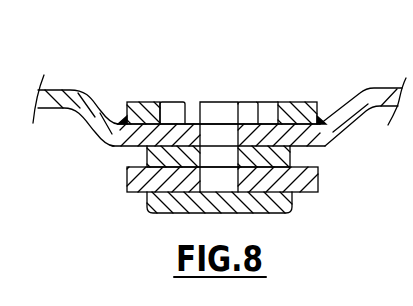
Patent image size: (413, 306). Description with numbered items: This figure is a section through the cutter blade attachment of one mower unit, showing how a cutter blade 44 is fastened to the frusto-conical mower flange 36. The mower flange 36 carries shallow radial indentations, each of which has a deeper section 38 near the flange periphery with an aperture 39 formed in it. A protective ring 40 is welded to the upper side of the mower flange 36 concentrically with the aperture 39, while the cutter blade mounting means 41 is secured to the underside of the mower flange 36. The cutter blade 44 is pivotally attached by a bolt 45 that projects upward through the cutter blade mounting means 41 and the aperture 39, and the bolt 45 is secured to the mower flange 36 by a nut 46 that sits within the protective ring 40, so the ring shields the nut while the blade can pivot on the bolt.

The mower flange 36 is at (64, 89).
The deeper section 38 is at (350, 100).
The aperture 39 is at (180, 133).
The protective ring 40 is at (139, 101).
The cutter blade mounting means 41 is at (127, 176).
The cutter blade 44 is at (292, 147).
The bolt 45 is at (292, 208).
The nut 46 is at (201, 101).